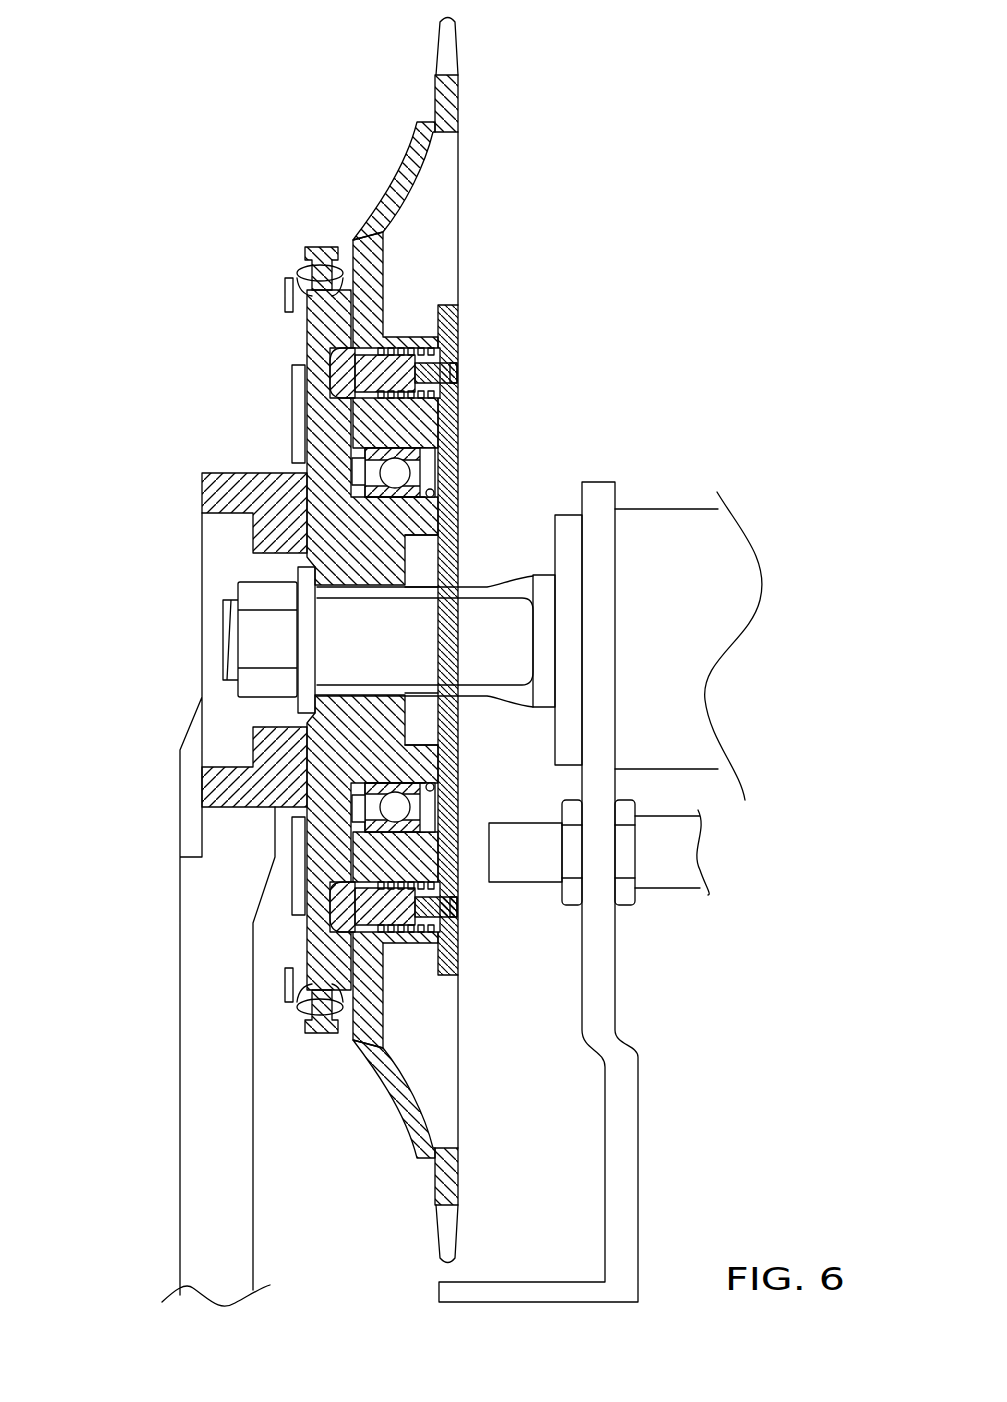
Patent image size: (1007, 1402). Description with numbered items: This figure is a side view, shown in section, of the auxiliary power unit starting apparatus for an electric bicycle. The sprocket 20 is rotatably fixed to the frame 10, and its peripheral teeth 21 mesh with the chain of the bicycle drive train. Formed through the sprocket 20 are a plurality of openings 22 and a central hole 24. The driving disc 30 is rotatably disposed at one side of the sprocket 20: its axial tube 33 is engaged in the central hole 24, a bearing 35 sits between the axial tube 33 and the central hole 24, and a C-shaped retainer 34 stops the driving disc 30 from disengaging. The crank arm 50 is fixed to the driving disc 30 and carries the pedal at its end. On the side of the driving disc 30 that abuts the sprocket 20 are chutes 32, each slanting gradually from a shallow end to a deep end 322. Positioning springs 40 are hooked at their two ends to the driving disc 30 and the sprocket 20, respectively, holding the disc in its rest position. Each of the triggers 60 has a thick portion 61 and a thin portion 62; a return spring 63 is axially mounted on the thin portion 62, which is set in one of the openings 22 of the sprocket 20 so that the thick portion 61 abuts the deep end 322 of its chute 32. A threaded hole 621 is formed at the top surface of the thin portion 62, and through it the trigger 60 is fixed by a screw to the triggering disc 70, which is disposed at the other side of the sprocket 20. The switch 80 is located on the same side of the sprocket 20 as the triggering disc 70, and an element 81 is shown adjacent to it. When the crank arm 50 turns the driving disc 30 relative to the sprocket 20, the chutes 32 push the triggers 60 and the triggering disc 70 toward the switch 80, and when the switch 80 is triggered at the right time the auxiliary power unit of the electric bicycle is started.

The frame 10 is at (668, 532).
The sprocket 20 is at (369, 182).
The peripheral teeth 21 is at (448, 72).
The openings 22 is at (440, 330).
The central hole 24 is at (430, 478).
The driving disc 30 is at (290, 440).
The chutes 32 is at (340, 395).
The deep end 322 is at (338, 362).
The axial tube 33 is at (403, 496).
The C-shaped retainer 34 is at (433, 494).
The bearing 35 is at (398, 470).
The positioning springs 40 is at (305, 265).
The crank arm 50 is at (217, 970).
The triggers 60 is at (367, 349).
The thick portion 61 is at (332, 373).
The thin portion 62 is at (460, 345).
The threaded hole 621 is at (440, 388).
The return spring 63 is at (452, 340).
The triggering disc 70 is at (458, 815).
The switch 80 is at (510, 897).
The bolt head 81 is at (515, 853).